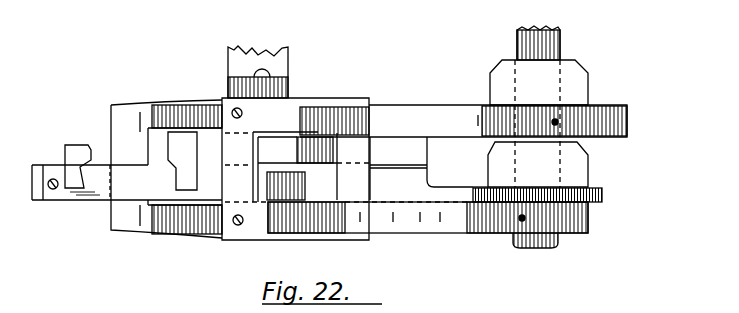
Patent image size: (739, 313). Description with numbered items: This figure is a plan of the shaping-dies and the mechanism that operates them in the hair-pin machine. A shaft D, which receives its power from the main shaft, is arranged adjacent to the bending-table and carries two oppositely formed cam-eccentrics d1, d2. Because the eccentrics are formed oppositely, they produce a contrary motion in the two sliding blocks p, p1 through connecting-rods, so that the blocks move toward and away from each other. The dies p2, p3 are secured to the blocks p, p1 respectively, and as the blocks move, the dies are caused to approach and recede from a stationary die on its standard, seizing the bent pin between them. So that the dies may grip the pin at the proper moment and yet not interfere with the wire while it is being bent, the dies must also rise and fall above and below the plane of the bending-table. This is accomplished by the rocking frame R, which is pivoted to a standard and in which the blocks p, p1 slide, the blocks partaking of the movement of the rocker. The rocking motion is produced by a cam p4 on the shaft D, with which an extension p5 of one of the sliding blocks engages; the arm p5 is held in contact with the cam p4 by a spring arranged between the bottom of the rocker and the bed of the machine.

The sliding block p is at (104, 189).
The sliding block p1 is at (290, 89).
The die p2 is at (82, 170).
The die p3 is at (172, 162).
The cam p4 is at (603, 198).
The extension p5 is at (462, 180).
The shaft D is at (538, 106).
The cam-eccentric d1 is at (630, 122).
The cam-eccentric d2 is at (535, 246).
The rocking frame R is at (240, 169).